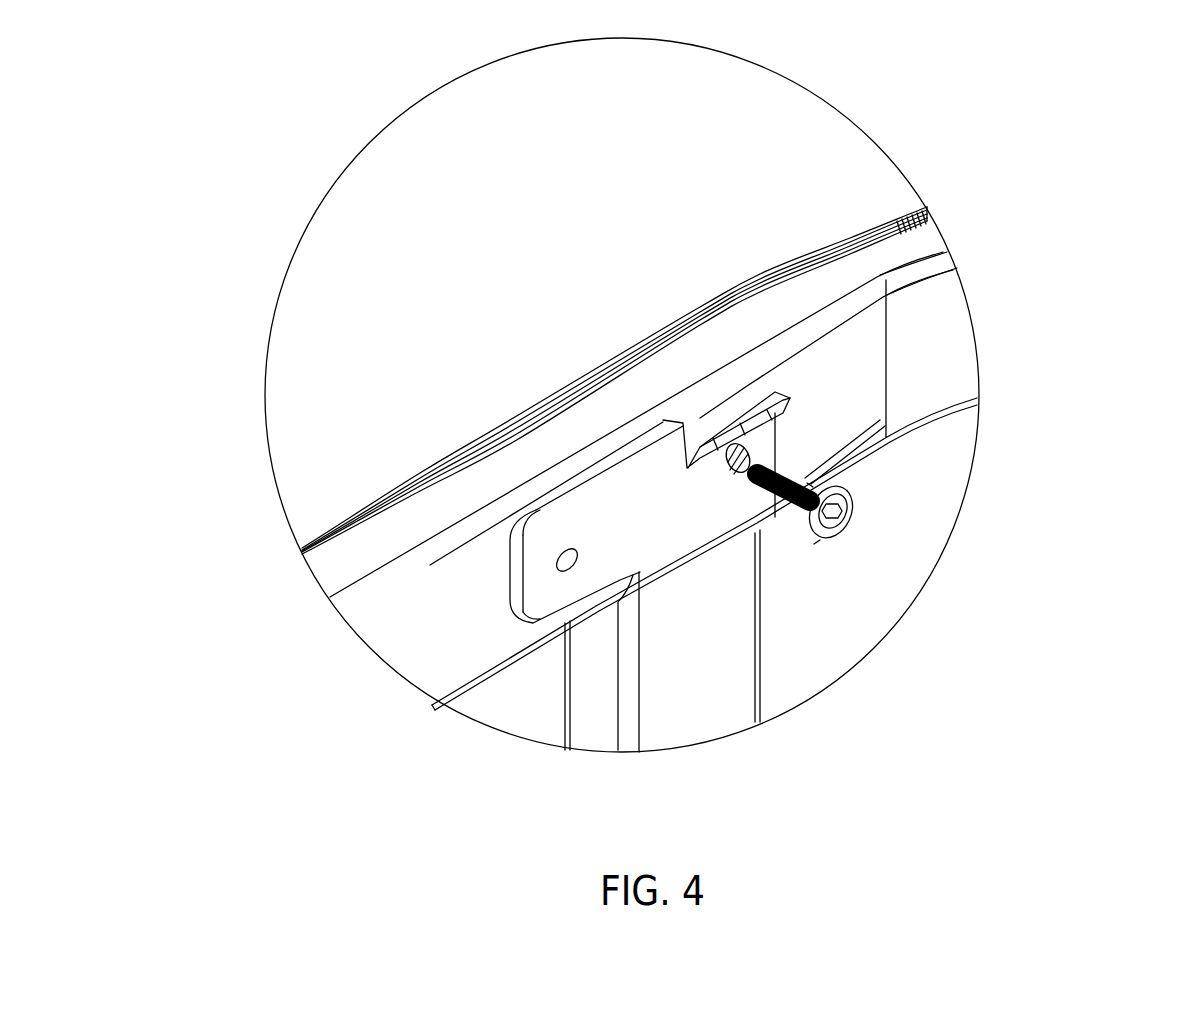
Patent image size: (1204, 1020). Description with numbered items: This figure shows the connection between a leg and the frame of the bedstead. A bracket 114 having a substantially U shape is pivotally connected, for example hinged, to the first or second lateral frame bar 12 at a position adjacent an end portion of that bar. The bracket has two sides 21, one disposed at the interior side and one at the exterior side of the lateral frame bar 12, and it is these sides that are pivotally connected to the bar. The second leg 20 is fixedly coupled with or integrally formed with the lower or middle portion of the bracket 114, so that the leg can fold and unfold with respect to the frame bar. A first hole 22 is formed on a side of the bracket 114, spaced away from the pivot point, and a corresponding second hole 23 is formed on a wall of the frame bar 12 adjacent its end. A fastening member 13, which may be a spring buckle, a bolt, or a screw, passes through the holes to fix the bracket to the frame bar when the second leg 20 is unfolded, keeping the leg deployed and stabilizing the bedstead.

The bracket 114 is at (637, 342).
The sides 21 is at (590, 372).
The first or second lateral frame bar 12 is at (828, 392).
The first hole 22 is at (760, 450).
The fastening member 13 is at (853, 517).
The second hole 23 is at (740, 466).
The second leg 20 is at (677, 643).